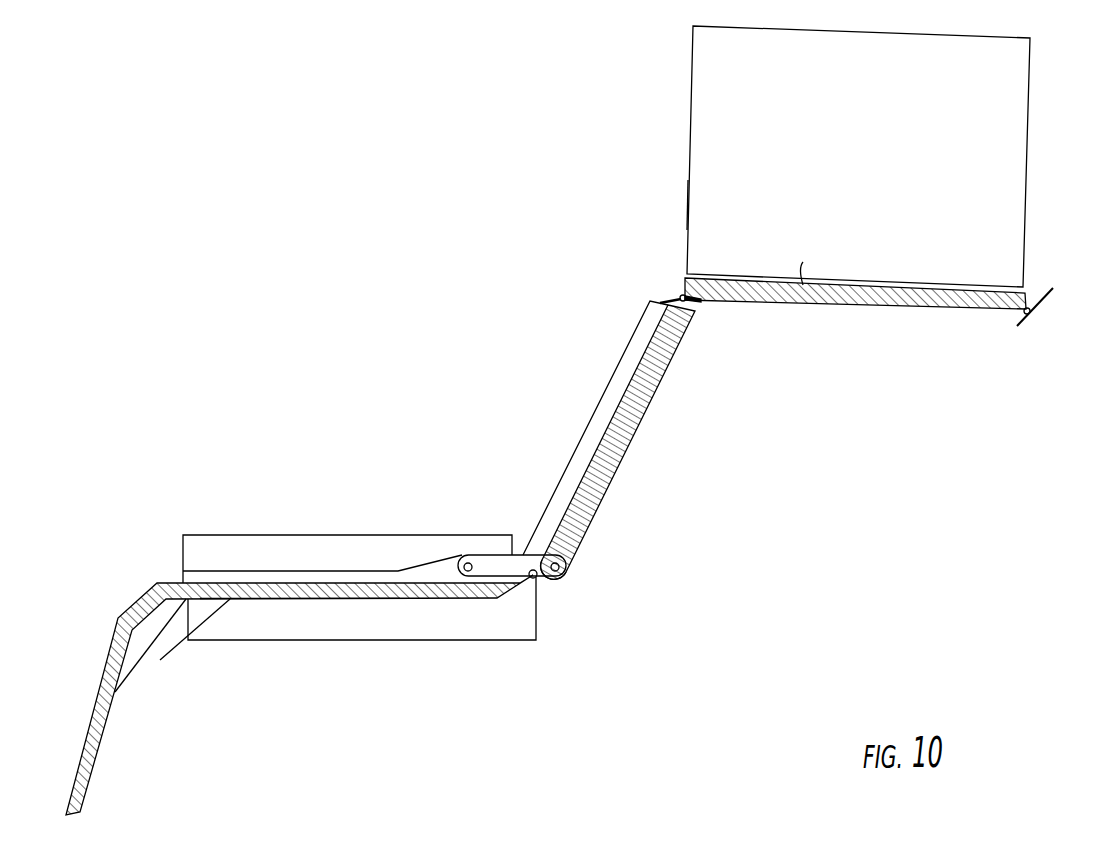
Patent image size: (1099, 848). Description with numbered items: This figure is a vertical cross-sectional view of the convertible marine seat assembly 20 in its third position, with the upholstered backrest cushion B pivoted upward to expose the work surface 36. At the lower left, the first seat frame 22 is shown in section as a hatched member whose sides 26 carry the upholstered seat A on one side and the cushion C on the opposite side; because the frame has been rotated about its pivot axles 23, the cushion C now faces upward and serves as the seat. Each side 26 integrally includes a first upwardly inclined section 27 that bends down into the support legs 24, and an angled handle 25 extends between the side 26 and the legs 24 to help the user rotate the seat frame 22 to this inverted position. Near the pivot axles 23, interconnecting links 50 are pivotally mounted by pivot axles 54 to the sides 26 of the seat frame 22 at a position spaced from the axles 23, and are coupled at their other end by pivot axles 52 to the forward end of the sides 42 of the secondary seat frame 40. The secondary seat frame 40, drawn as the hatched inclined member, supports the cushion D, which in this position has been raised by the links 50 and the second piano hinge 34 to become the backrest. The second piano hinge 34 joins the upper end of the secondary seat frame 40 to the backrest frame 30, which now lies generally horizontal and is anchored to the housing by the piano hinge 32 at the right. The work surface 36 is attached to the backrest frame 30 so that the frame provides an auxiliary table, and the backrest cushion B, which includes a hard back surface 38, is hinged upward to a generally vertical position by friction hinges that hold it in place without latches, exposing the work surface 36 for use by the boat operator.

The seat assembly 20 is at (355, 430).
The first seat frame 22 is at (173, 571).
The pivot axles 23 is at (537, 578).
The support legs 24 is at (99, 756).
The angled handle 25 is at (161, 661).
The sides 26 is at (280, 597).
The first upwardly inclined section 27 is at (138, 597).
The backrest frame 30 is at (921, 319).
The piano hinge 32 is at (1035, 300).
The second piano hinge 34 is at (676, 301).
The work surface 36 is at (803, 262).
The hard back surface 38 is at (848, 160).
The secondary seat frame 40 is at (649, 436).
The sides 42 is at (583, 550).
The interconnecting links 50 is at (499, 553).
The pivot axles 52 is at (560, 572).
The pivot axles 54 is at (470, 572).
The upholstered seat A is at (339, 641).
The backrest cushion B is at (688, 200).
The cushion C is at (338, 535).
The cushion D is at (582, 437).